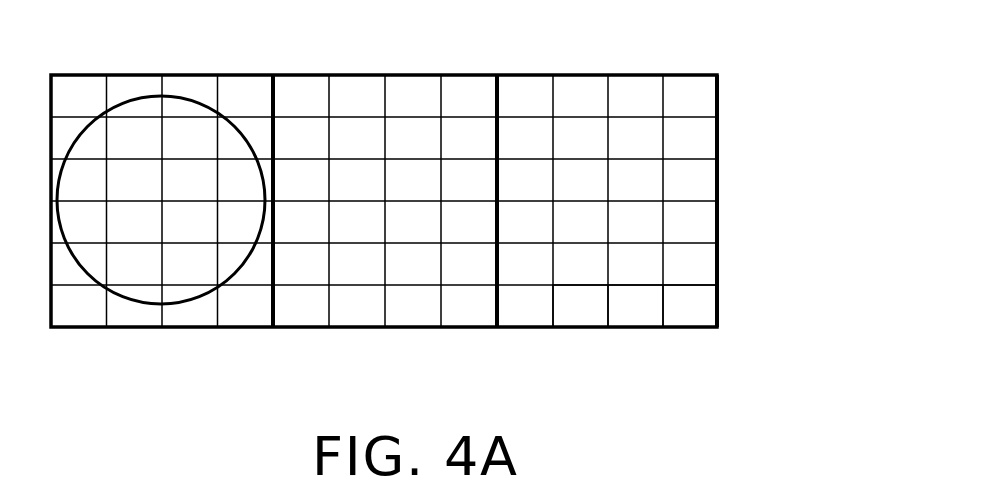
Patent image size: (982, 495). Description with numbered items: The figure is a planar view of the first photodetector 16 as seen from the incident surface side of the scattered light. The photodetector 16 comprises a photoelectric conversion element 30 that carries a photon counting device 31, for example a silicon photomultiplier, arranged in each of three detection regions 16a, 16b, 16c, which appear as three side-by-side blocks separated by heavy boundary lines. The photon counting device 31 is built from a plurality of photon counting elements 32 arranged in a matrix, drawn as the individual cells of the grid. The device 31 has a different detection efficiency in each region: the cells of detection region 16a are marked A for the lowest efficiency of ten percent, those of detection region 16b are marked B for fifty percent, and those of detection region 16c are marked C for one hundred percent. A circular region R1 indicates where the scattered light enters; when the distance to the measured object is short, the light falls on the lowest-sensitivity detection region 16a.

The first photodetector 16 is at (436, 213).
The photoelectric conversion element 30 is at (426, 213).
The detection region 16a is at (48, 68).
The detection region 16b is at (277, 68).
The detection region 16c is at (500, 68).
The photon counting device 31 is at (305, 75).
The photon counting element 32 is at (585, 318).
The region where the scattered light enters R1 is at (115, 107).